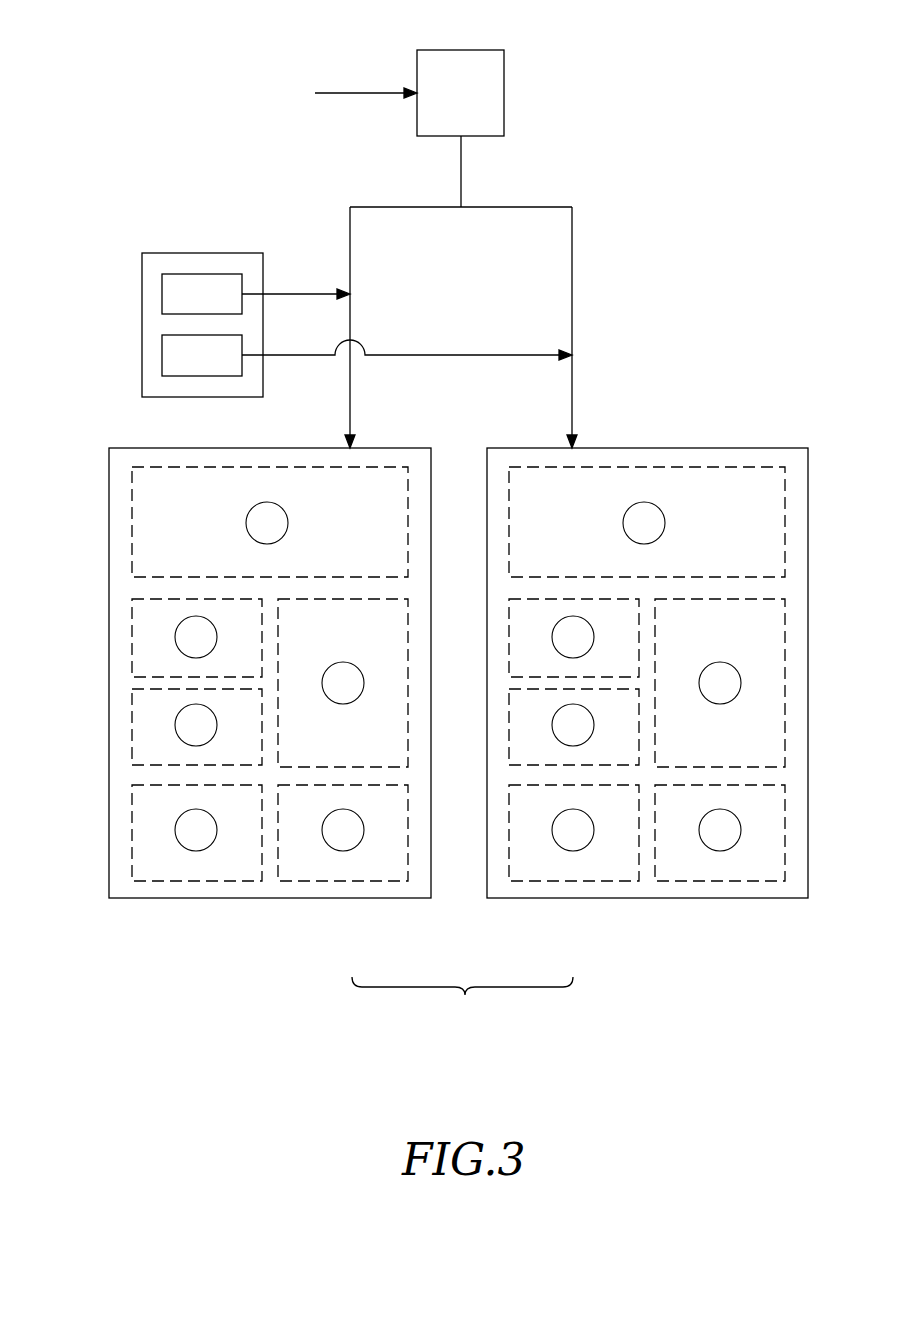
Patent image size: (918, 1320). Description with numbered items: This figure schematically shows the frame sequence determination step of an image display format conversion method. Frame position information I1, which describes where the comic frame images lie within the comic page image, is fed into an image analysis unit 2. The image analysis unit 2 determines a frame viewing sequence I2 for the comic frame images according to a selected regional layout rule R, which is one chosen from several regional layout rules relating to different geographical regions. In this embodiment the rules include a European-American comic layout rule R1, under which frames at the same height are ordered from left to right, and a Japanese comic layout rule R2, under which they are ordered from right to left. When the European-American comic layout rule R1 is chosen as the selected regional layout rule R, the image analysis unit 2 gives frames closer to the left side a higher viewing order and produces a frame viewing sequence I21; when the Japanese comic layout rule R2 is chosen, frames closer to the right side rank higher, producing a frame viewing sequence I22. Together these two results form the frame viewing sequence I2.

The image analysis unit 2 is at (460, 93).
The frame position information I1 is at (359, 90).
The selected regional layout rule R is at (152, 326).
The European-American comic layout rule R1 is at (256, 294).
The Japanese comic layout rule R2 is at (367, 355).
The frame viewing sequence I21 is at (388, 890).
The frame viewing sequence I22 is at (554, 890).
The frame viewing sequence I2 is at (462, 1001).